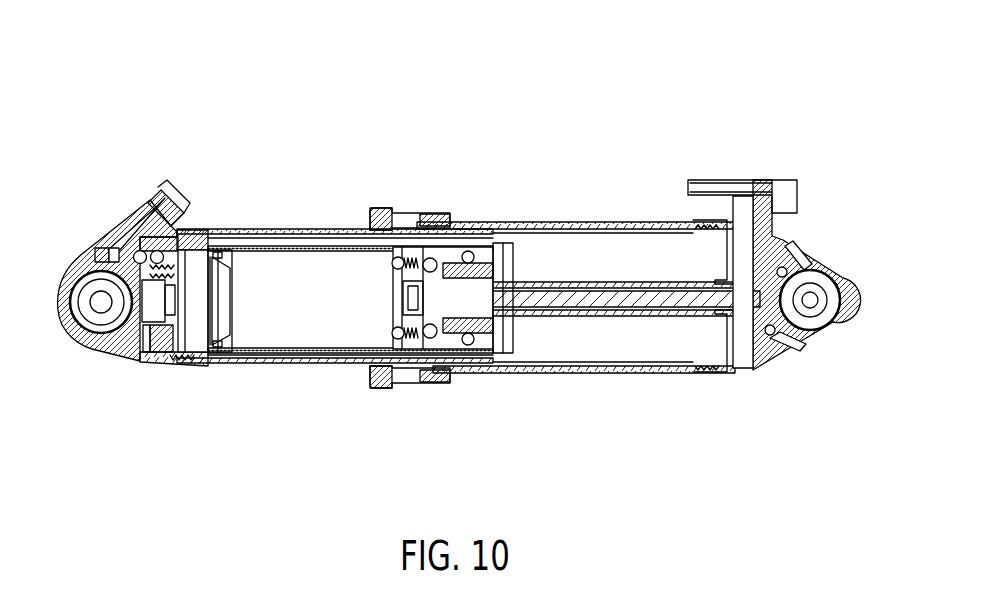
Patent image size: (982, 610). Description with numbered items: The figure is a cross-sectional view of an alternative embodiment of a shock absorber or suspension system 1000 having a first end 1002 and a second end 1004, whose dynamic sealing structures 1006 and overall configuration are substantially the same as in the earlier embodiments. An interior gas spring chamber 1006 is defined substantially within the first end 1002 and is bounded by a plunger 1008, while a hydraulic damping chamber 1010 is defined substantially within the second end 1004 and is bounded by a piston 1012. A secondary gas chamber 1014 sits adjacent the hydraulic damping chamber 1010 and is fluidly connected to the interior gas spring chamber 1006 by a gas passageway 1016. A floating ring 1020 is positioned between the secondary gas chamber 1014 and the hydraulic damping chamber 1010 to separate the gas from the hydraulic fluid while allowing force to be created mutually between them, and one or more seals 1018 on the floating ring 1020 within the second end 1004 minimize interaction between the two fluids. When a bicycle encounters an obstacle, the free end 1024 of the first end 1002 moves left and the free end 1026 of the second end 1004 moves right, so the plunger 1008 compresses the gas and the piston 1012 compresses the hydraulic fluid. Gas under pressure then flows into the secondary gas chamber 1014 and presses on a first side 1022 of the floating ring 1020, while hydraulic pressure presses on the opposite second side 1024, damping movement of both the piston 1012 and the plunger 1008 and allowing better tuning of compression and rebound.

The suspension system 1000 is at (488, 123).
The first end 1002 is at (609, 194).
The second end 1004 is at (314, 217).
The interior gas spring chamber 1006 is at (416, 411).
The plunger 1008 is at (495, 362).
The hydraulic damping chamber 1010 is at (262, 340).
The piston 1012 is at (395, 326).
The secondary gas chamber 1014 is at (197, 360).
The gas passageway 1016 is at (318, 356).
The seals 1018 is at (219, 251).
The floating ring 1020 is at (228, 250).
The first side 1022 is at (200, 280).
The free end 1024 is at (232, 300).
The free end 1026 is at (97, 347).